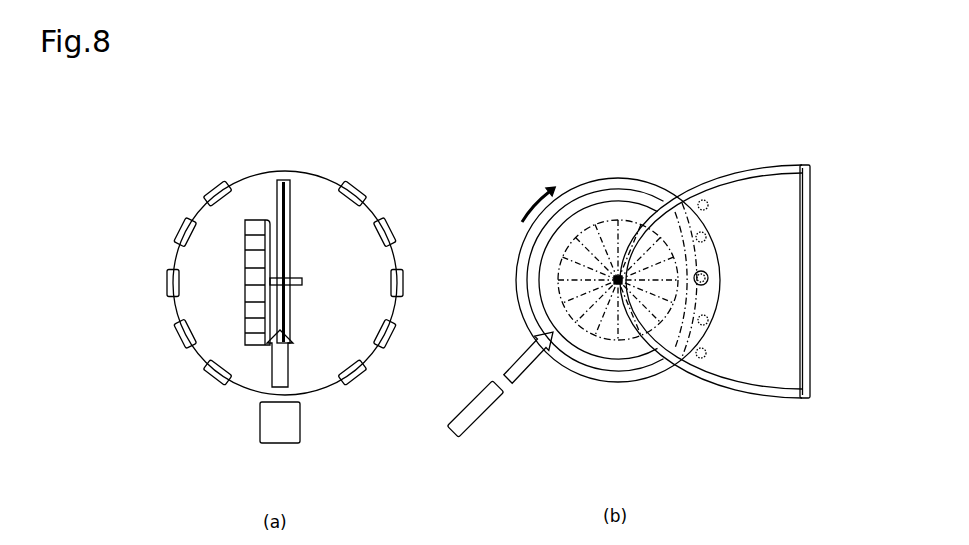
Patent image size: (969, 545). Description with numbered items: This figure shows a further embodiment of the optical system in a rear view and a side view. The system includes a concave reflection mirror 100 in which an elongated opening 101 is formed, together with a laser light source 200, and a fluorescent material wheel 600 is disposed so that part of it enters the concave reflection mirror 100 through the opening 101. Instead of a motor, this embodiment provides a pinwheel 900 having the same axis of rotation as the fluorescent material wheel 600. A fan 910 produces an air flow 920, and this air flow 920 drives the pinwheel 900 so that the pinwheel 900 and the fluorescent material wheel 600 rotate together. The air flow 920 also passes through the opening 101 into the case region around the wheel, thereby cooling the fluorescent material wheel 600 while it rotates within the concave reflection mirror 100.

The concave reflection mirror 100 is at (760, 166).
The elongated opening 101 is at (292, 198).
The laser light source 200 is at (212, 188).
The fluorescent material wheel 600 is at (578, 185).
The pinwheel 900 is at (247, 292).
The fan 910 is at (260, 418).
The air flow 920 is at (523, 353).